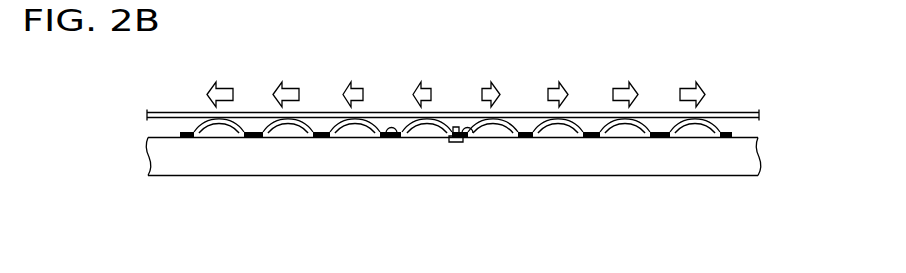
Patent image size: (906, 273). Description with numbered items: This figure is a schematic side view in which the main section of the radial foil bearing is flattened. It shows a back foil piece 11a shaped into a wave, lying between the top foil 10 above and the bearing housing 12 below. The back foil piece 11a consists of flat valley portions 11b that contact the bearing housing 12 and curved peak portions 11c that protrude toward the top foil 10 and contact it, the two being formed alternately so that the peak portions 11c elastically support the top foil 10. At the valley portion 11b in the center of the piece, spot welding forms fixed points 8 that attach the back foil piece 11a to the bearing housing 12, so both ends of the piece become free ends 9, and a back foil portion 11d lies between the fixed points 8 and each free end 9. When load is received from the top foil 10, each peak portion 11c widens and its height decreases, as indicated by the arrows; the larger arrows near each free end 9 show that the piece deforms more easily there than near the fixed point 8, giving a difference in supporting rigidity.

The fixed point 8 is at (456, 127).
The free end 9 is at (181, 131).
The top foil 10 is at (389, 113).
The back foil piece 11a is at (336, 121).
The valley portion 11b is at (660, 128).
The peak portion 11c is at (342, 122).
The back foil portion 11d is at (285, 129).
The bearing housing 12 is at (338, 158).